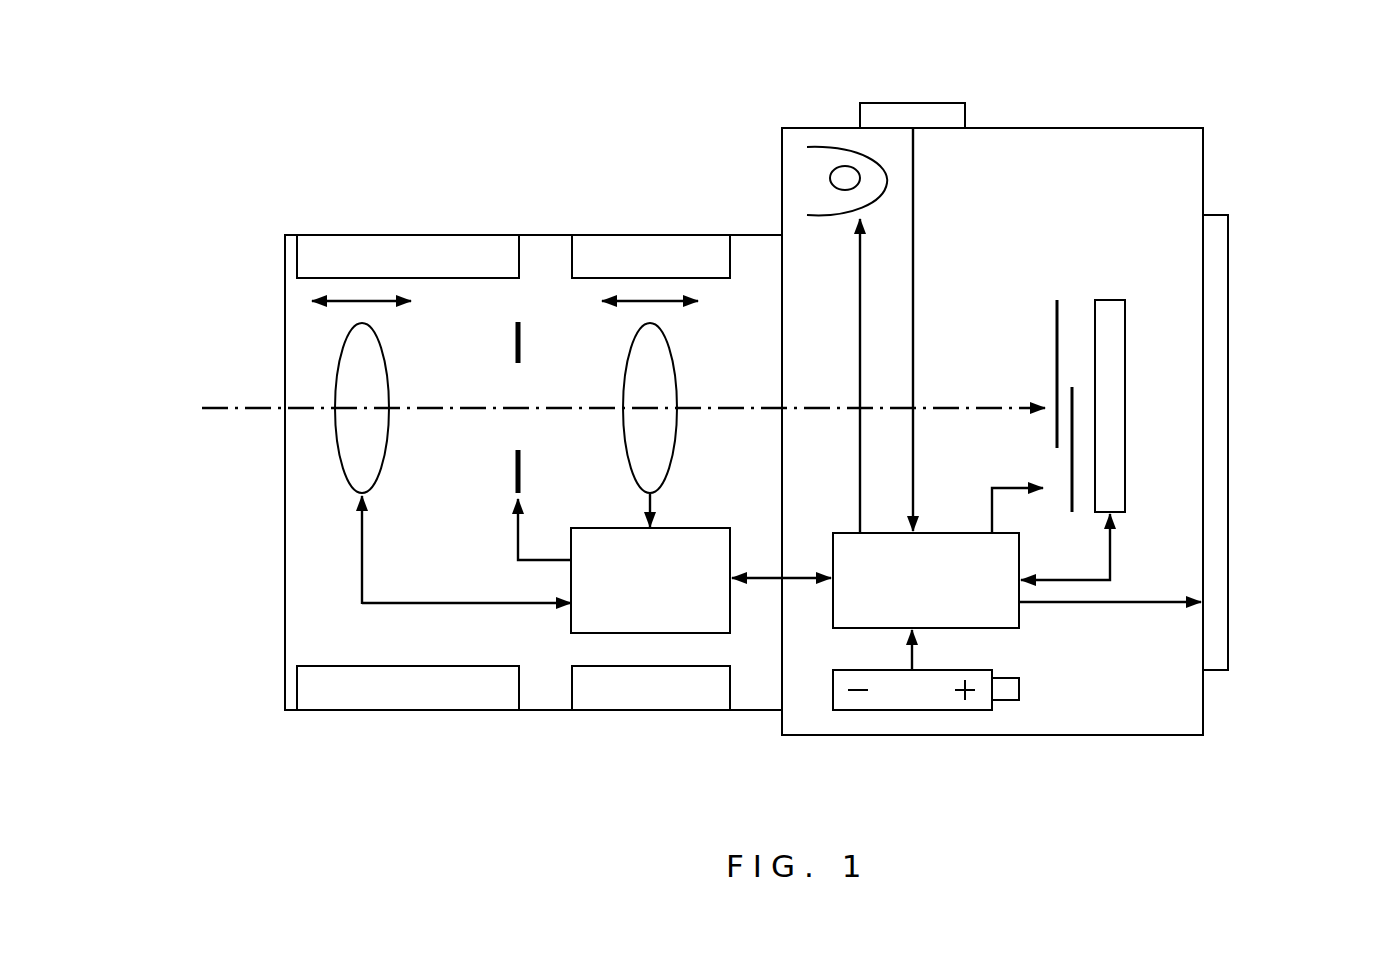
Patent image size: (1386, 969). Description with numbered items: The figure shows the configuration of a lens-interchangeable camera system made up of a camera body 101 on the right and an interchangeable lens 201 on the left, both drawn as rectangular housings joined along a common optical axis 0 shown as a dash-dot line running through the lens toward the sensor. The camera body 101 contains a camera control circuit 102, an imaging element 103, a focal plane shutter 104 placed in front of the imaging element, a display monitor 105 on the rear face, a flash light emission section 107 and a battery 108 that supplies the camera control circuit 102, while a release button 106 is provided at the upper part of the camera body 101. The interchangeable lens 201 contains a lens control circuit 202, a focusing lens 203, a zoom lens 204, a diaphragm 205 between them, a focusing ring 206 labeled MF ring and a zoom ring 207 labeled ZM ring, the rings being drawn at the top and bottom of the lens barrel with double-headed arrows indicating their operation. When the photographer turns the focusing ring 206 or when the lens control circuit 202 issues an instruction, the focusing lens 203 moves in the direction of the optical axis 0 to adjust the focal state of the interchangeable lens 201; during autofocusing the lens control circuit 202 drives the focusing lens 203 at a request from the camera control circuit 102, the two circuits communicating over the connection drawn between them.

The optical axis 0 is at (260, 408).
The camera body 101 is at (1203, 162).
The camera control circuit 102 is at (1003, 628).
The imaging element 103 is at (1110, 300).
The focal plane shutter 104 is at (1048, 331).
The display monitor 105 is at (1228, 272).
The release button 106 is at (907, 103).
The flash light emission section 107 is at (810, 168).
The battery 108 is at (942, 710).
The interchangeable lens 201 is at (282, 630).
The lens control circuit 202 is at (683, 528).
The focusing lens 203 is at (337, 350).
The zoom lens 204 is at (622, 385).
The diaphragm 205 is at (515, 476).
The focusing ring 206 is at (366, 235).
The zoom ring 207 is at (632, 235).